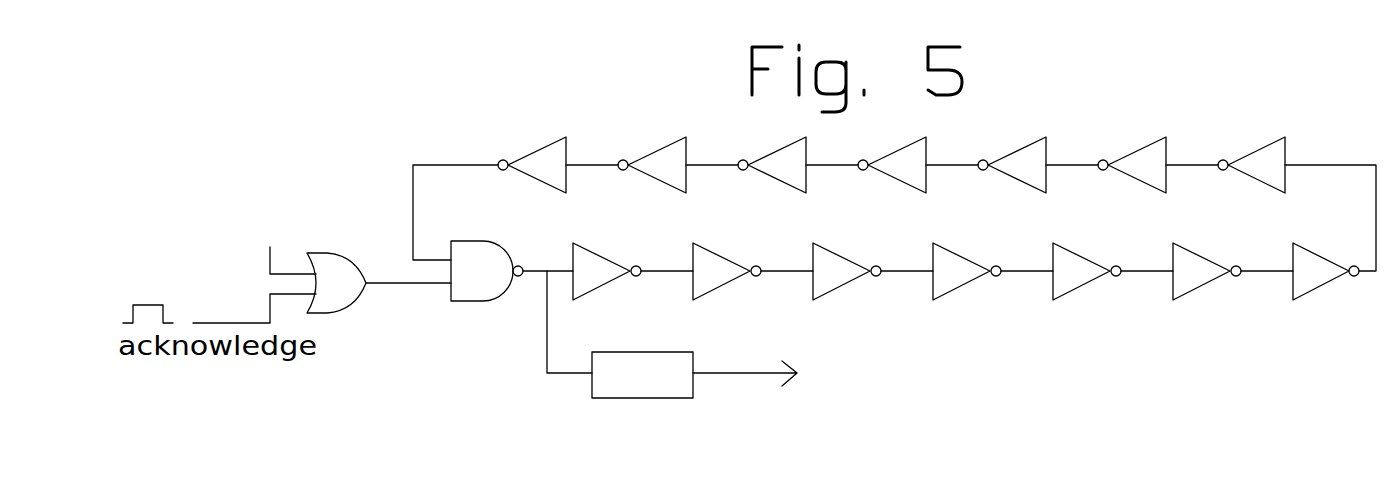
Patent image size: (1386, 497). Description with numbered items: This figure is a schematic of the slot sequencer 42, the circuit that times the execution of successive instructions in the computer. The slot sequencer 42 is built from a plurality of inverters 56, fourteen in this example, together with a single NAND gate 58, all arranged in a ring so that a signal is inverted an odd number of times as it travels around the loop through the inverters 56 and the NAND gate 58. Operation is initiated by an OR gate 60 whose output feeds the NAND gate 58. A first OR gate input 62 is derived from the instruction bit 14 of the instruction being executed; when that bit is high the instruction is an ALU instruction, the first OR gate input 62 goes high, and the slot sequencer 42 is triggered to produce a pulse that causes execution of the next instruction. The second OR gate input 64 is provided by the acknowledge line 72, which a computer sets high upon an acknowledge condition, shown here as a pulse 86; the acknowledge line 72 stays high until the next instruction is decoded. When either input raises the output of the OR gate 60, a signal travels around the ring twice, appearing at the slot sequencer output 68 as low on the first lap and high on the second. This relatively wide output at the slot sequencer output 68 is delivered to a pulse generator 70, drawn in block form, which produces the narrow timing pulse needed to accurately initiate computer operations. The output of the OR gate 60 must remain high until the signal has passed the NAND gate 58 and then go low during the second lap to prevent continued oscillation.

The input signal line 14 is at (281, 244).
The slot sequencer 42 is at (448, 140).
The inverter 56 is at (658, 155).
The NAND gate 58 is at (485, 278).
The OR gate 60 is at (333, 285).
The first OR gate input 62 is at (287, 272).
The second OR gate input 64 is at (270, 295).
The slot sequencer output 68 is at (548, 315).
The pulse generator 70 is at (660, 388).
The acknowledge line 72 is at (210, 322).
The acknowledge pulse 86 is at (143, 303).